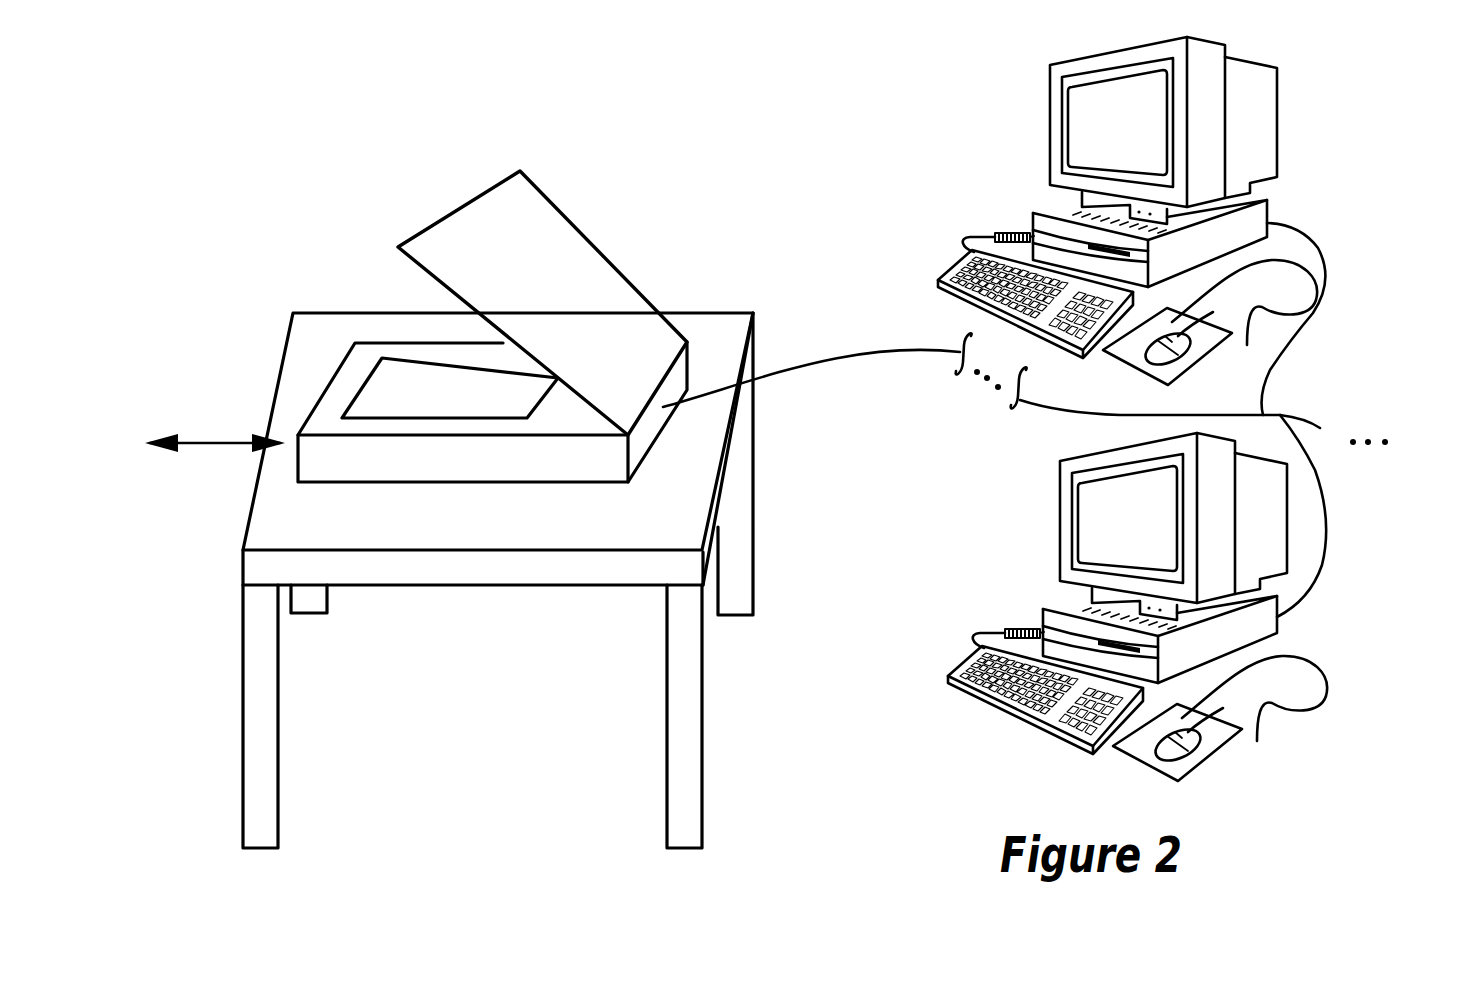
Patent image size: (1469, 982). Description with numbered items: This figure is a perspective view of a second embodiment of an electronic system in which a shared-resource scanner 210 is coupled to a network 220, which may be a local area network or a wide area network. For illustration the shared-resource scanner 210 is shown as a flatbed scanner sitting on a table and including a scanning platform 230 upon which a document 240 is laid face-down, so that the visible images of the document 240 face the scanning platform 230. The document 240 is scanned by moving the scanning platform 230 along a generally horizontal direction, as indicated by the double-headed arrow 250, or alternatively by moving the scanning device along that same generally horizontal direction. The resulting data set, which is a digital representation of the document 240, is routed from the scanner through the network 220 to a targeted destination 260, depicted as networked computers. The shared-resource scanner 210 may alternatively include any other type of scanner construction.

The shared-resource scanner 210 is at (563, 330).
The network 220 is at (803, 378).
The scanning platform 230 is at (330, 415).
The document 240 is at (418, 393).
The arrow 250 is at (230, 440).
The targeted destination 260 is at (1303, 407).